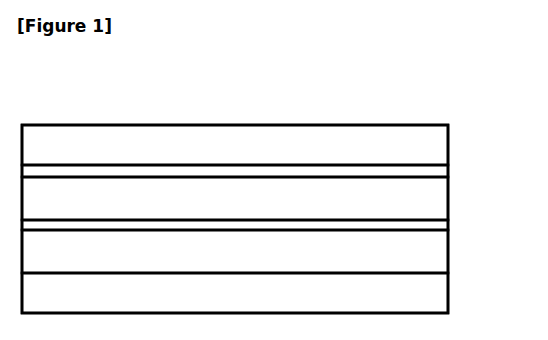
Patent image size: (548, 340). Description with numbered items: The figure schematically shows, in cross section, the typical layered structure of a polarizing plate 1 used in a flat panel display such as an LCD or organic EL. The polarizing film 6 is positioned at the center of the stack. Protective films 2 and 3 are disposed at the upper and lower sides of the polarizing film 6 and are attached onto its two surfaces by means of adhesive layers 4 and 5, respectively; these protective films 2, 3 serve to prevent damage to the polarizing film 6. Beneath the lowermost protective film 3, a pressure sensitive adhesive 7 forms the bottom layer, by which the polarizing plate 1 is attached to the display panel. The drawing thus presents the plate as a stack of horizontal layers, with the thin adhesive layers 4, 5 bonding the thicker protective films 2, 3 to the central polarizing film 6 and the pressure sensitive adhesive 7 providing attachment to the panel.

The polarizing plate 1 is at (73, 90).
The protective film 2 is at (435, 147).
The protective film 3 is at (433, 268).
The adhesive layer 4 is at (435, 172).
The adhesive layer 5 is at (435, 225).
The polarizing film 6 is at (435, 200).
The pressure sensitive adhesive 7 is at (433, 302).